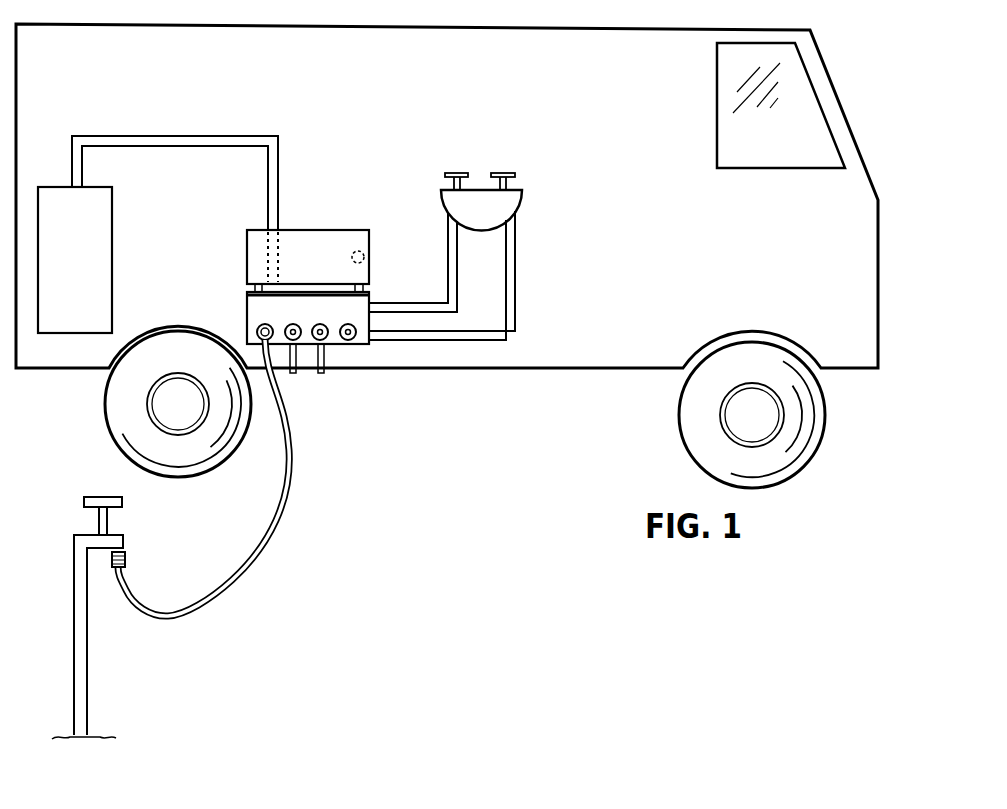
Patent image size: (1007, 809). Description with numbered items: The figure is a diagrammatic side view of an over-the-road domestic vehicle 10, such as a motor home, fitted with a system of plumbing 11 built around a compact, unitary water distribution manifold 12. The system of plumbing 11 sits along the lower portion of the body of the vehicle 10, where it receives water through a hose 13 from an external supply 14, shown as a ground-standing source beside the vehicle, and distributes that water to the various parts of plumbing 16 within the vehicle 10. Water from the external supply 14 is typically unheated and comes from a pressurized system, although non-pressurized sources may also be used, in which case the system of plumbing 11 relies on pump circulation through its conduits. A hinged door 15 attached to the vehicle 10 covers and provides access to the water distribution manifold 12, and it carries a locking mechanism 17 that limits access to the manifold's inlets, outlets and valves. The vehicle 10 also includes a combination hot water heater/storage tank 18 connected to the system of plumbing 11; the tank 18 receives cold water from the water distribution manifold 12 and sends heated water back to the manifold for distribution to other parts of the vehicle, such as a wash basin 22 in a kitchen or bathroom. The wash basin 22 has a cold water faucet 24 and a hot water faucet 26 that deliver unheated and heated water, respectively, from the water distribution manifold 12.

The over-the-road domestic vehicle 10 is at (838, 80).
The system of plumbing 11 is at (279, 346).
The water distribution manifold 12 is at (366, 347).
The hose 13 is at (143, 616).
The external supply 14 is at (87, 541).
The hinged door 15 is at (356, 231).
The plumbing 16 is at (283, 221).
The locking mechanism 17 is at (365, 258).
The combination hot water heater/storage tank 18 is at (84, 251).
The wash basin 22 is at (510, 200).
The cold water faucet 24 is at (449, 173).
The hot water faucet 26 is at (507, 173).